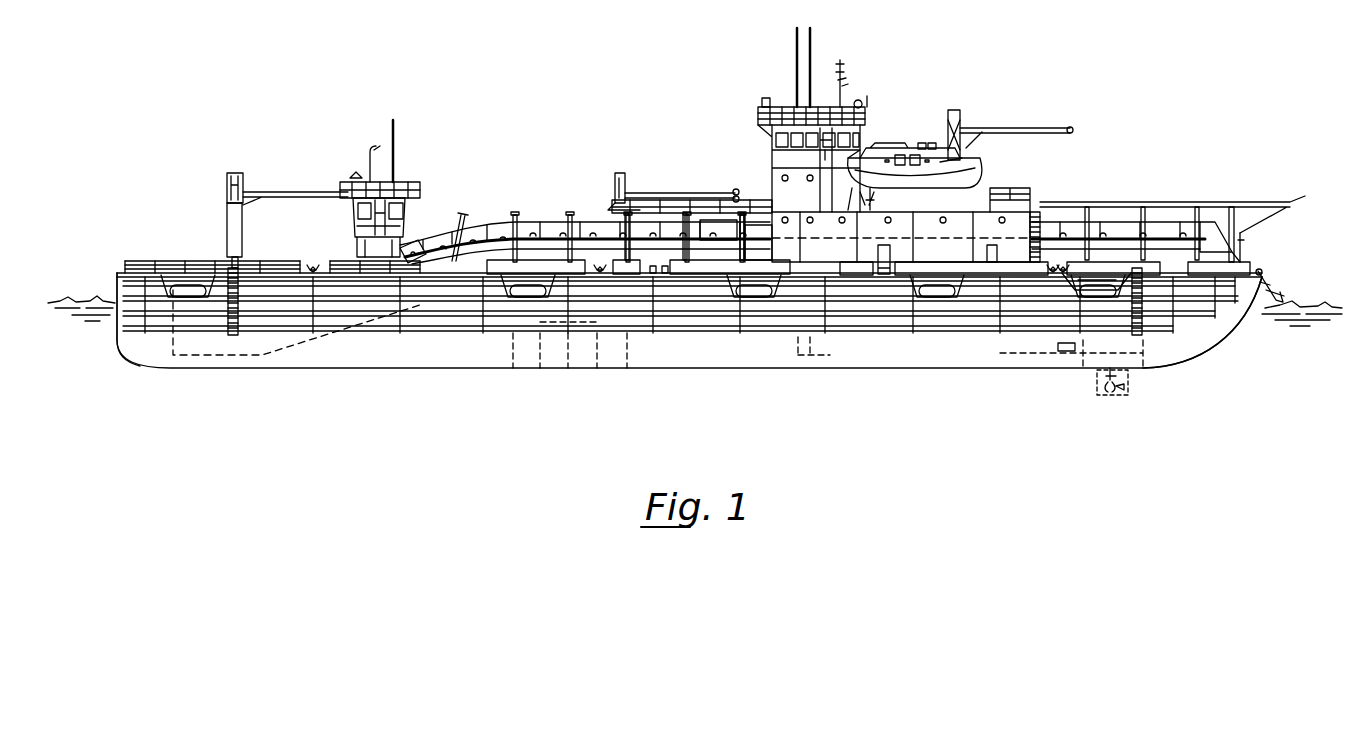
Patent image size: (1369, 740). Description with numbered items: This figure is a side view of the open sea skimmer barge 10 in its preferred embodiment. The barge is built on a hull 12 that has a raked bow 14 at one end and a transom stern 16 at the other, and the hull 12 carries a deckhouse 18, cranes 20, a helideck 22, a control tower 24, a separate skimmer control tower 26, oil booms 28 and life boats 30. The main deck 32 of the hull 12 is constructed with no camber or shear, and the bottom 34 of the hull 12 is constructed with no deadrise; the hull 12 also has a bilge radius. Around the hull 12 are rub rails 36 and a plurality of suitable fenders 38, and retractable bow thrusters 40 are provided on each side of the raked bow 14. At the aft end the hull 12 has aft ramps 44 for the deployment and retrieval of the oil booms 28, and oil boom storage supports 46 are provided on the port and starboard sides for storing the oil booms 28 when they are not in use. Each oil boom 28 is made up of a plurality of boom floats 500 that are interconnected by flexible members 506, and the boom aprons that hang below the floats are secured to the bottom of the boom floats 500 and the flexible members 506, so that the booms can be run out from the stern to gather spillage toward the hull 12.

The open sea skimmer barge 10 is at (1115, 150).
The hull 12 is at (673, 358).
The raked bow 14 is at (1270, 287).
The transom stern 16 is at (117, 295).
The deckhouse 18 is at (1010, 232).
The cranes 20 is at (232, 232).
The helideck 22 is at (1167, 205).
The control tower 24 is at (825, 130).
The skimmer control tower 26 is at (397, 222).
The oil booms 28 is at (499, 227).
The life boats 30 is at (972, 176).
The main deck 32 is at (1103, 277).
The bottom 34 is at (958, 369).
The rub rails 36 is at (1180, 303).
The fenders 38 is at (532, 293).
The retractable bow thrusters 40 is at (1117, 386).
The aft ramps 44 is at (318, 332).
The oil boom storage supports 46 is at (518, 213).
The boom floats 500 is at (483, 232).
The flexible members 506 is at (422, 246).